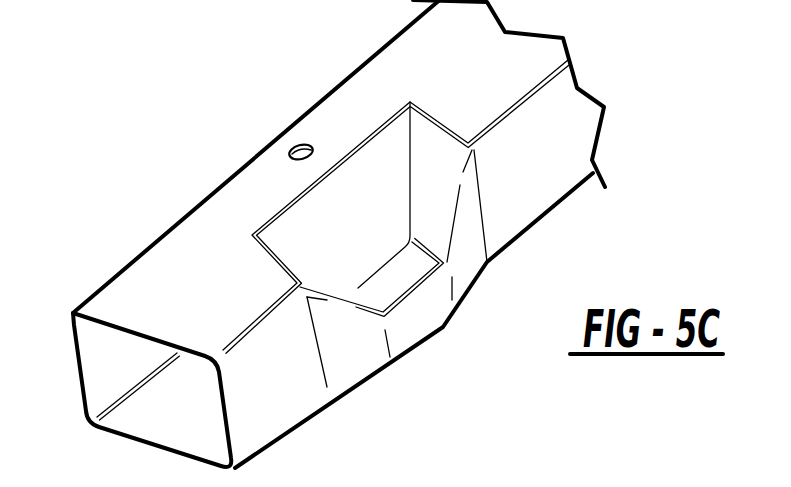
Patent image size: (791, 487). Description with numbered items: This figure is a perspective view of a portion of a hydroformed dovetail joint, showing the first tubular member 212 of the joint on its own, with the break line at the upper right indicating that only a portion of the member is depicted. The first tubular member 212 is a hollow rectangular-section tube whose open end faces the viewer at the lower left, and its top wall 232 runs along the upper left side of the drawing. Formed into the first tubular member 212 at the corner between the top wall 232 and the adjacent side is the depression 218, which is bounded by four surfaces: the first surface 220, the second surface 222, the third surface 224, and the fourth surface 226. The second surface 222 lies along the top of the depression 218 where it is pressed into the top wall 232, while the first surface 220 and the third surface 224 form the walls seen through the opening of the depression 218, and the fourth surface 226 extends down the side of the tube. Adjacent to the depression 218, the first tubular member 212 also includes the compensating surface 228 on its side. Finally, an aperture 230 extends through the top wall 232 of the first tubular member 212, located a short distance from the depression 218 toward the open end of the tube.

The first tubular member 212 is at (190, 210).
The depression 218 is at (379, 239).
The first surface 220 is at (395, 283).
The second surface 222 is at (347, 200).
The third surface 224 is at (433, 197).
The fourth surface 226 is at (327, 285).
The compensating surface 228 is at (408, 318).
The aperture 230 is at (290, 143).
The top wall 232 is at (257, 190).